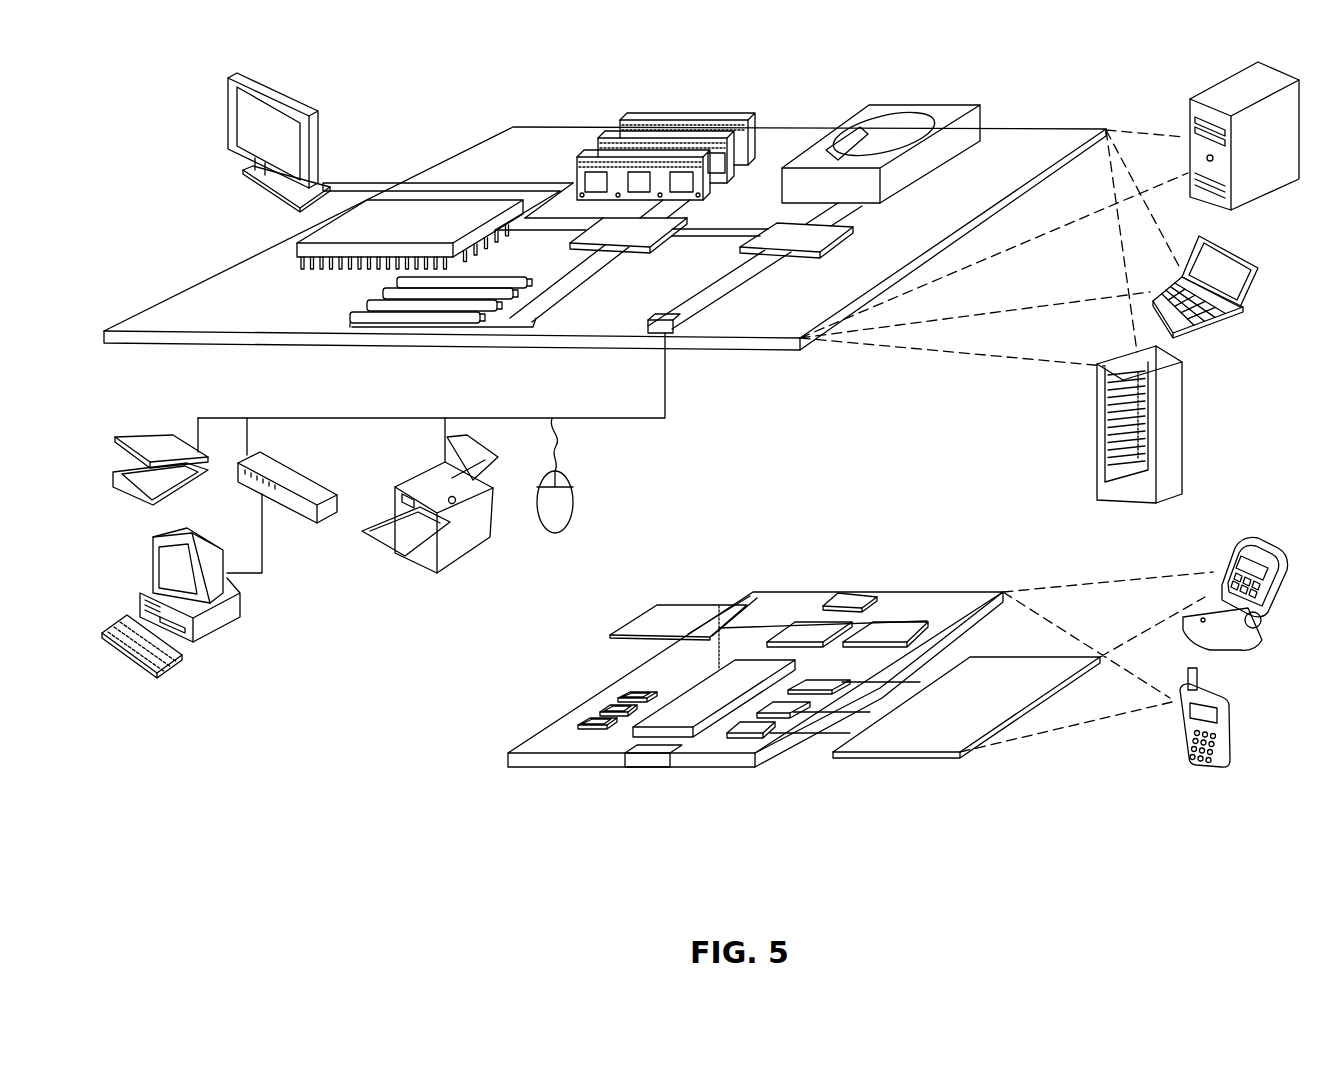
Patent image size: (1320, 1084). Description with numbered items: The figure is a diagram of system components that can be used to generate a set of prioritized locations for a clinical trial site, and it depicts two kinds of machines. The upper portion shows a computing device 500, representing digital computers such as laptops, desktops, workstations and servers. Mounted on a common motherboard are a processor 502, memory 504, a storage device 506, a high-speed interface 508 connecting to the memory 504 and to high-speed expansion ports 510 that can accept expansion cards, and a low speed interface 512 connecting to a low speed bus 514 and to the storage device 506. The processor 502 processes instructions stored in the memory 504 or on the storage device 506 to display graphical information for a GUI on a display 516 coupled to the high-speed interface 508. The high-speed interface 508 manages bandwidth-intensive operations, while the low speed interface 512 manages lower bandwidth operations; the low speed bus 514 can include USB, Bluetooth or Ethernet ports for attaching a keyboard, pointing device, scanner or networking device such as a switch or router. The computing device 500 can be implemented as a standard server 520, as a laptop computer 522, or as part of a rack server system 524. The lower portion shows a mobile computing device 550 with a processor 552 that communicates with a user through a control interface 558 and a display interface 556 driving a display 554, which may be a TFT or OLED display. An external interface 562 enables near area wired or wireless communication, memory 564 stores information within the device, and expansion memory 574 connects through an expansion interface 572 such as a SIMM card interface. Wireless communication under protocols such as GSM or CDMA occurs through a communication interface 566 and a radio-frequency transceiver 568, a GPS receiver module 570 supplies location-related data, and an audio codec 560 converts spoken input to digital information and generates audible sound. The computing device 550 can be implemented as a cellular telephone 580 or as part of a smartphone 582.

The computing device 500 is at (427, 99).
The processor 502 is at (297, 247).
The memory 504 is at (665, 125).
The storage device 506 is at (866, 106).
The high-speed interface 508 is at (600, 230).
The high-speed expansion ports 510 is at (357, 310).
The low speed interface 512 is at (780, 236).
The low speed bus 514 is at (676, 340).
The display 516 is at (236, 78).
The standard server 520 is at (1190, 110).
The laptop computer 522 is at (1168, 332).
The rack server system 524 is at (1097, 459).
The computing device 550 is at (484, 766).
The processor 552 is at (690, 732).
The display 554 is at (925, 740).
The display interface 556 is at (756, 736).
The control interface 558 is at (790, 707).
The audio codec 560 is at (818, 688).
The external interface 562 is at (657, 755).
The memory 564 is at (600, 716).
The communication interface 566 is at (800, 628).
The transceiver 568 is at (887, 632).
The GPS receiver module 570 is at (853, 592).
The expansion interface 572 is at (722, 627).
The expansion memory 574 is at (653, 606).
The cellular telephone 580 is at (1240, 550).
The smartphone 582 is at (1180, 727).